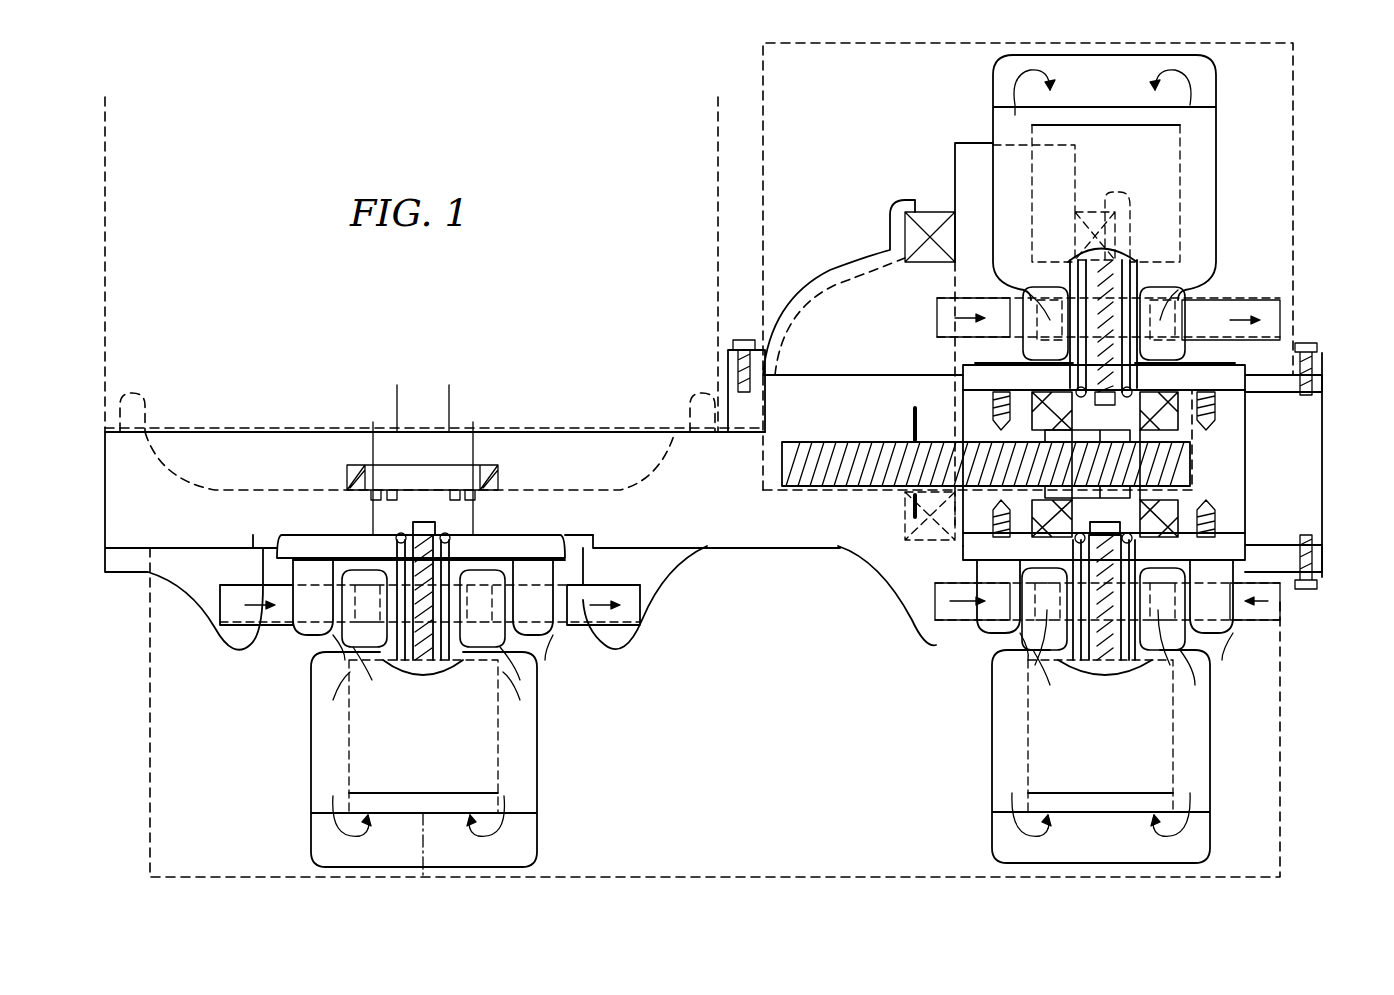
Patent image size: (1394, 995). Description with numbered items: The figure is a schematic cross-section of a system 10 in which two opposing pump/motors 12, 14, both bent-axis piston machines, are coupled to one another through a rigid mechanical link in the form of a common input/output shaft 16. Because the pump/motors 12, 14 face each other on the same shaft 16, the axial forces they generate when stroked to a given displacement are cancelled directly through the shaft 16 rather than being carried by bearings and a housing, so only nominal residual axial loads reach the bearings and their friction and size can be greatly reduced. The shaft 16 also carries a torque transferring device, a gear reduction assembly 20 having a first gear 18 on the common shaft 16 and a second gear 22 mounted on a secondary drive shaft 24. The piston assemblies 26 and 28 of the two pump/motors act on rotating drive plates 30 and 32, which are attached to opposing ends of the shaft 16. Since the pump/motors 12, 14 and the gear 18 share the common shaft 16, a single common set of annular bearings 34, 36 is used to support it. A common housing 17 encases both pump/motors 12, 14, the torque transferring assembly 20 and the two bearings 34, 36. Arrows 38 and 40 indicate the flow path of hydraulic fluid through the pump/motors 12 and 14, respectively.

The system 10 is at (940, 80).
The pump/motor 12 is at (1143, 760).
The pump/motor 14 is at (1160, 150).
The common input/output shaft 16 is at (1113, 438).
The common housing 17 is at (805, 488).
The first gear 18 is at (1045, 422).
The gear reduction assembly 20 is at (1040, 528).
The second gear 22 is at (805, 485).
The secondary drive shaft 24 is at (905, 442).
The piston assembly 26 is at (1130, 545).
The piston assembly 28 is at (1135, 388).
The drive plate 30 is at (1120, 505).
The drive plate 32 is at (1128, 415).
The bearing 34 is at (1180, 552).
The bearing 36 is at (1025, 393).
The arrows 38 is at (1010, 658).
The arrows 40 is at (1150, 268).